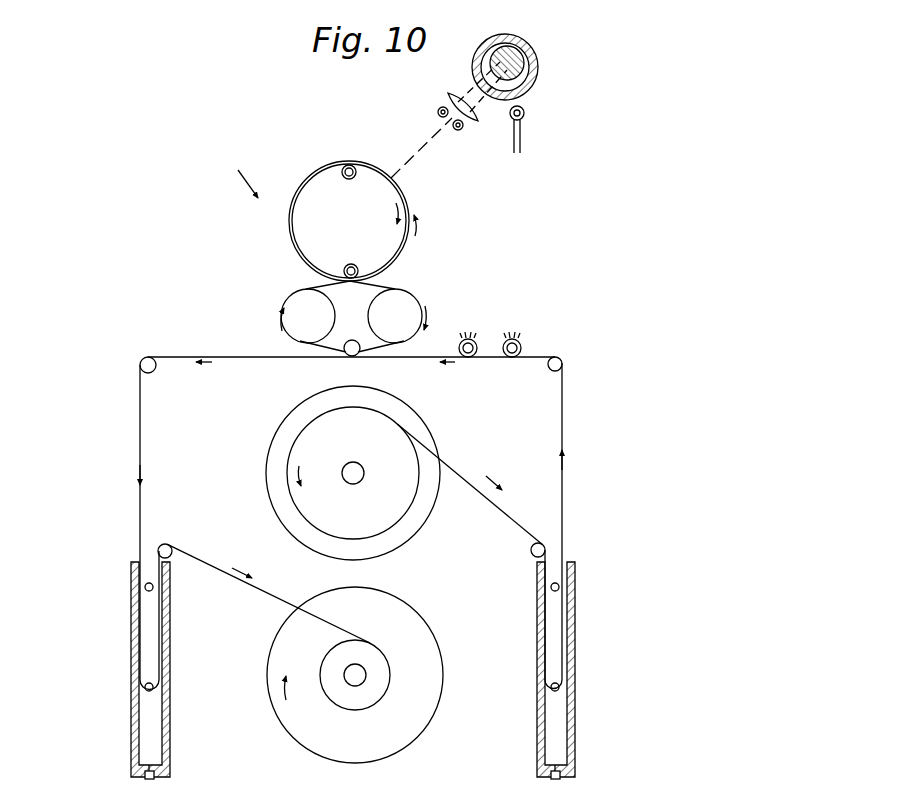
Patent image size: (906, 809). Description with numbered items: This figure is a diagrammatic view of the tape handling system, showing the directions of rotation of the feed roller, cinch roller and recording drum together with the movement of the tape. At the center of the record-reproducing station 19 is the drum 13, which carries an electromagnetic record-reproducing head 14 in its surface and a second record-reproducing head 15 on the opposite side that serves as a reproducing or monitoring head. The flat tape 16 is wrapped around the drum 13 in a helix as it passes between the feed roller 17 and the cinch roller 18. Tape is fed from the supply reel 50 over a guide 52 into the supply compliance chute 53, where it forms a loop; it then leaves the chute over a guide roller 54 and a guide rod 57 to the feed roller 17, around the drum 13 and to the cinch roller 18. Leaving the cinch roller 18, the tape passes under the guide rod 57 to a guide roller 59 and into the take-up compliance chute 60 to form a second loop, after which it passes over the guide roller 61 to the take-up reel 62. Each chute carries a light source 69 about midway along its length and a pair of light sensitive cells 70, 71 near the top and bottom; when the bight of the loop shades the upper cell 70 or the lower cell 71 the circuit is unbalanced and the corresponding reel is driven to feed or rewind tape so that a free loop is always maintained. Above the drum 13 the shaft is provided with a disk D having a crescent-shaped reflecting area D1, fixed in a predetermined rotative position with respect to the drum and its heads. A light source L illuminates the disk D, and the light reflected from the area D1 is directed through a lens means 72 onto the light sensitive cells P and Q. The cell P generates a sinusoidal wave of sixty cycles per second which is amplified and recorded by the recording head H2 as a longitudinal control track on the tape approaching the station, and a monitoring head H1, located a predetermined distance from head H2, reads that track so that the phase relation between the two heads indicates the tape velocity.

The drum 13 is at (298, 233).
The record-reproducing head 14 is at (344, 180).
The second record-reproducing head 15 is at (357, 265).
The tape 16 is at (226, 356).
The feed roller 17 is at (300, 302).
The cinch roller 18 is at (398, 309).
The record-reproducing station 19 is at (233, 173).
The supply reel 50 is at (436, 420).
The guide 52 is at (531, 553).
The supply compliance chute 53 is at (537, 655).
The guide roller 54 is at (553, 371).
The guide rod 57 is at (357, 334).
The guide roller 59 is at (156, 371).
The take-up compliance chute 60 is at (130, 655).
The guide roller 61 is at (170, 557).
The take-up reel 62 is at (268, 714).
The light source 69 is at (146, 691).
The light sensitive cell 70 is at (144, 587).
The light sensitive cell 71 is at (144, 778).
The lens means 72 is at (472, 118).
The disk D is at (539, 66).
The crescent-shaped reflecting area D1 is at (523, 80).
The light source L is at (525, 114).
The light sensitive cell P is at (458, 131).
The light sensitive cell Q is at (437, 112).
The monitoring head H1 is at (480, 325).
The recording head H2 is at (523, 341).